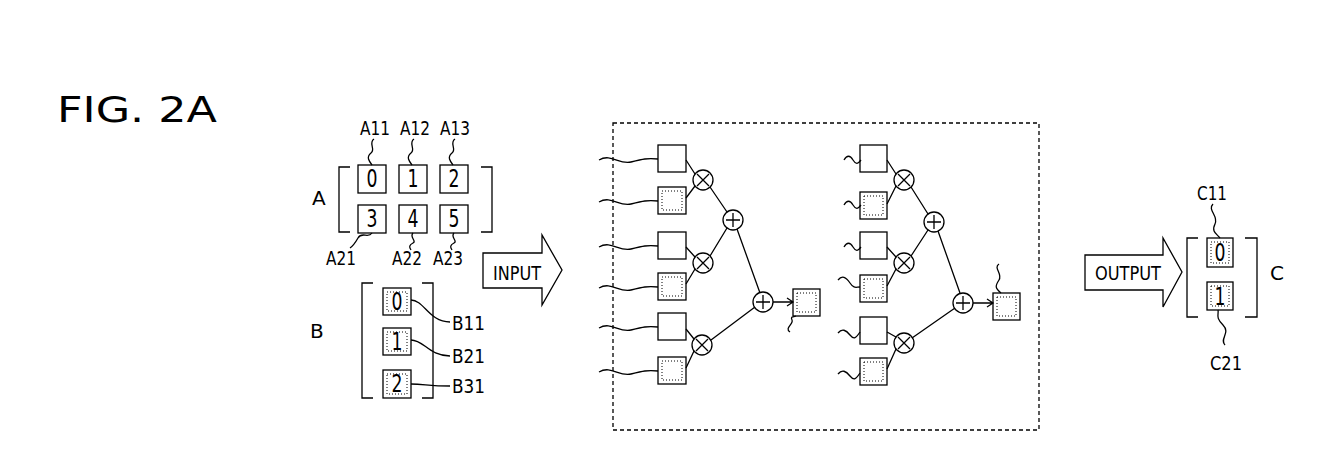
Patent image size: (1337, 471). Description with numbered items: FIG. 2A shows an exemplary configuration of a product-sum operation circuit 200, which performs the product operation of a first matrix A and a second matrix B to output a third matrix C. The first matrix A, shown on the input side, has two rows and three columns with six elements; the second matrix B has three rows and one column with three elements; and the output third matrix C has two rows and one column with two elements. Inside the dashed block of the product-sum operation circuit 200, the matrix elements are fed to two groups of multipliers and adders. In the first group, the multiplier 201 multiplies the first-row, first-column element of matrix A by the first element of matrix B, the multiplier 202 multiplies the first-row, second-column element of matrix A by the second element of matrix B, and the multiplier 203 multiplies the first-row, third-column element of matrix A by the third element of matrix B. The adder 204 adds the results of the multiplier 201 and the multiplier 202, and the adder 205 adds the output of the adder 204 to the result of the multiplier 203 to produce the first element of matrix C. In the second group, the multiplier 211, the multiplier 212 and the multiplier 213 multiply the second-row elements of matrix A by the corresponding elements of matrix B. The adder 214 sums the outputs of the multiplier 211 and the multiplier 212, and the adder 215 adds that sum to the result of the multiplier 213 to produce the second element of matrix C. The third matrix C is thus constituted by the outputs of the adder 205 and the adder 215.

The product-sum operation circuit 200 is at (948, 123).
The multiplier 201 is at (708, 169).
The multiplier 202 is at (702, 252).
The multiplier 203 is at (706, 356).
The adder 204 is at (735, 210).
The adder 205 is at (768, 291).
The multiplier 211 is at (911, 171).
The multiplier 212 is at (905, 253).
The multiplier 213 is at (908, 333).
The adder 214 is at (938, 212).
The adder 215 is at (966, 314).